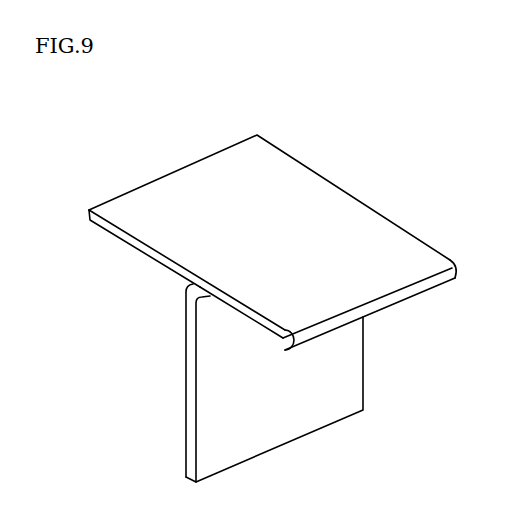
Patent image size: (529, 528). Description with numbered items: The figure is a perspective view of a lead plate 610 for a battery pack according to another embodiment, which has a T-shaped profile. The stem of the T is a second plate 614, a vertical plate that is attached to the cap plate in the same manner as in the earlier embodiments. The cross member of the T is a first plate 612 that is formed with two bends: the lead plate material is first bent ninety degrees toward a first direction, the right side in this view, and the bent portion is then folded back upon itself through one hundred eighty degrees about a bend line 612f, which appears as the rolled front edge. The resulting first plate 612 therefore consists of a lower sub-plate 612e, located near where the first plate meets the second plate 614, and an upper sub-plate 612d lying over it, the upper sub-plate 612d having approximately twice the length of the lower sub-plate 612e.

The lead plate 610 is at (408, 143).
The first plate 612 is at (172, 182).
The upper sub-plate 612d is at (425, 253).
The lower sub-plate 612e is at (219, 300).
The bend line 612f is at (448, 275).
The second plate 614 is at (280, 433).